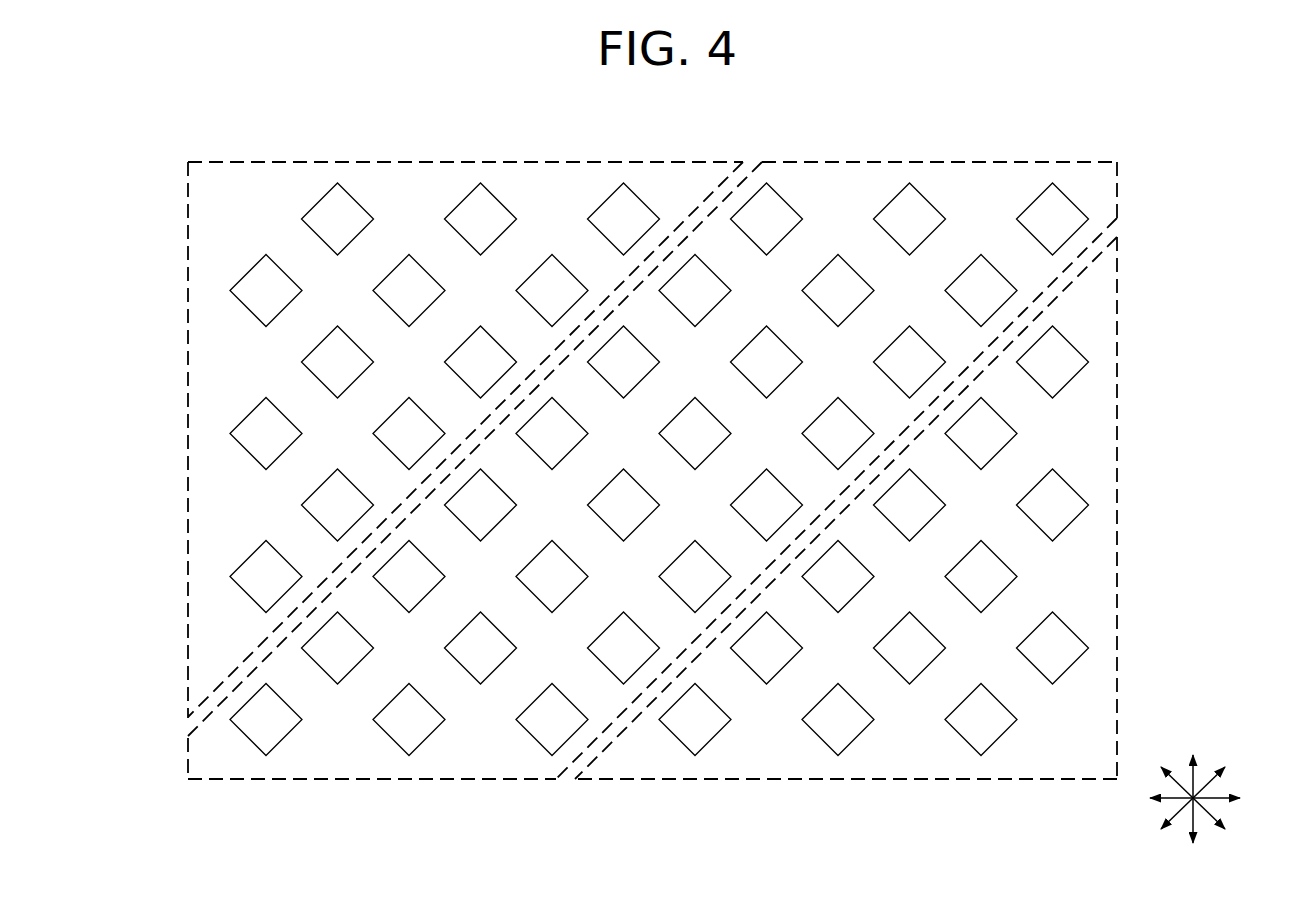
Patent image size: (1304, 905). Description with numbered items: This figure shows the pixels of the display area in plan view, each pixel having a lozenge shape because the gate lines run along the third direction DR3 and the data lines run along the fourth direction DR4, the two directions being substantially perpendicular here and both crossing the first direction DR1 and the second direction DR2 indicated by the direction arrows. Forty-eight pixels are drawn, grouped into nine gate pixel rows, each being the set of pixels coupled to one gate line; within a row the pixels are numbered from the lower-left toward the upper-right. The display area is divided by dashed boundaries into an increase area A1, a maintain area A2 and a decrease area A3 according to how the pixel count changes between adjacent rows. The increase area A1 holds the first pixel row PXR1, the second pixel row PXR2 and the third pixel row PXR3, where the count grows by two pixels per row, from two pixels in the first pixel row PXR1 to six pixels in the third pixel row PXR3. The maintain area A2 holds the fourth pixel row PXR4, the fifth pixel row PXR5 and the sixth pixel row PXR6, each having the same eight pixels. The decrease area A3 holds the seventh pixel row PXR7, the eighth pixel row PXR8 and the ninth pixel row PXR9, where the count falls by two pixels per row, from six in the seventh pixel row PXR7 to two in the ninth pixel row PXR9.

The increase area A1 is at (505, 161).
The maintain area A2 is at (928, 161).
The decrease area A3 is at (1118, 518).
The first pixel row PXR1 is at (284, 256).
The second pixel row PXR2 is at (356, 327).
The third pixel row PXR3 is at (427, 399).
The fourth pixel row PXR4 is at (499, 472).
The fifth pixel row PXR5 is at (642, 472).
The sixth pixel row PXR6 is at (786, 472).
The seventh pixel row PXR7 is at (857, 543).
The eighth pixel row PXR8 is at (928, 615).
The ninth pixel row PXR9 is at (999, 686).
The first direction DR1 is at (1193, 764).
The second direction DR2 is at (1236, 798).
The third direction DR3 is at (1222, 770).
The fourth direction DR4 is at (1165, 770).